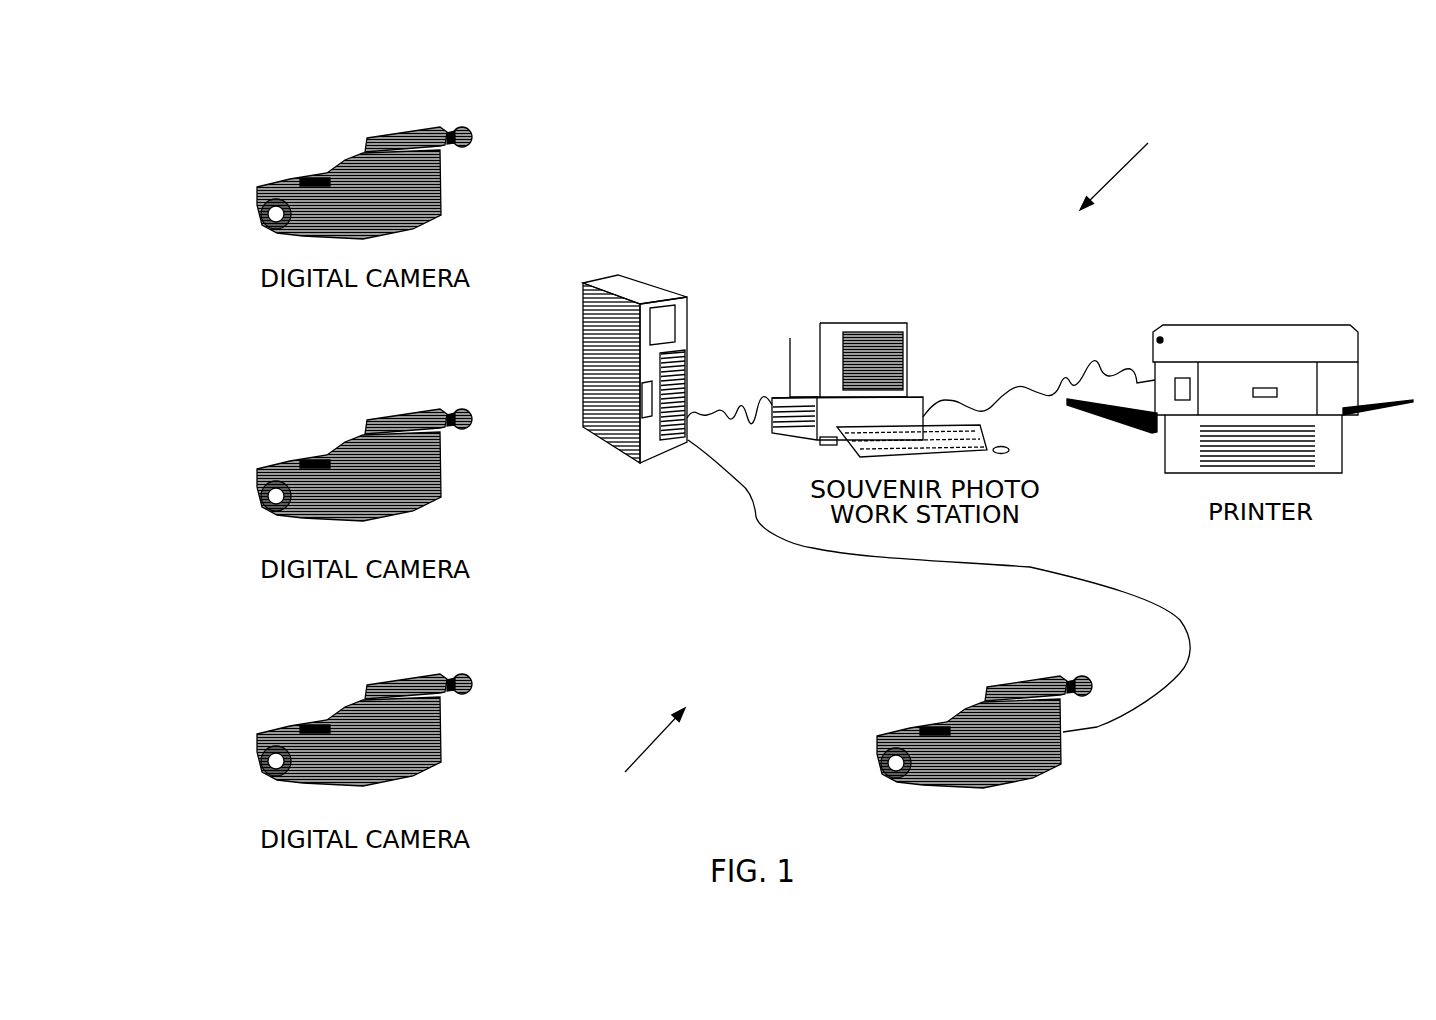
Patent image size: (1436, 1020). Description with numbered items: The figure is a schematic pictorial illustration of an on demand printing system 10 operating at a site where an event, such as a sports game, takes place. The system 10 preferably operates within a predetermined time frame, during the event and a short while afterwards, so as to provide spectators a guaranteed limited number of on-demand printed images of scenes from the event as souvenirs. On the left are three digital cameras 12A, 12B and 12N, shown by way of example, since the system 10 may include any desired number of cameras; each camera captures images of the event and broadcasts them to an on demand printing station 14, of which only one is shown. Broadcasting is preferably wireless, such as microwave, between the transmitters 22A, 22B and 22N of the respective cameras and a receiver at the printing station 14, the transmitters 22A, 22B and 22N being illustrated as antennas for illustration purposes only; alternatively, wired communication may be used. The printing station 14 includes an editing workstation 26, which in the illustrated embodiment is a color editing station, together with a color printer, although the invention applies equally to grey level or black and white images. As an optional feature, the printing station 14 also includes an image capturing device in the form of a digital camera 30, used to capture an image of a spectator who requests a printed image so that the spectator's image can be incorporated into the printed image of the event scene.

The on demand printing system 10 is at (645, 759).
The digital camera 12A is at (265, 220).
The digital camera 12B is at (265, 493).
The digital camera 12N is at (265, 777).
The transmitter 22A is at (465, 128).
The transmitter 22B is at (457, 420).
The transmitter 22N is at (470, 678).
The on demand printing station 14 is at (1129, 159).
The editing workstation 26 is at (862, 308).
The digital camera 30 is at (1058, 762).